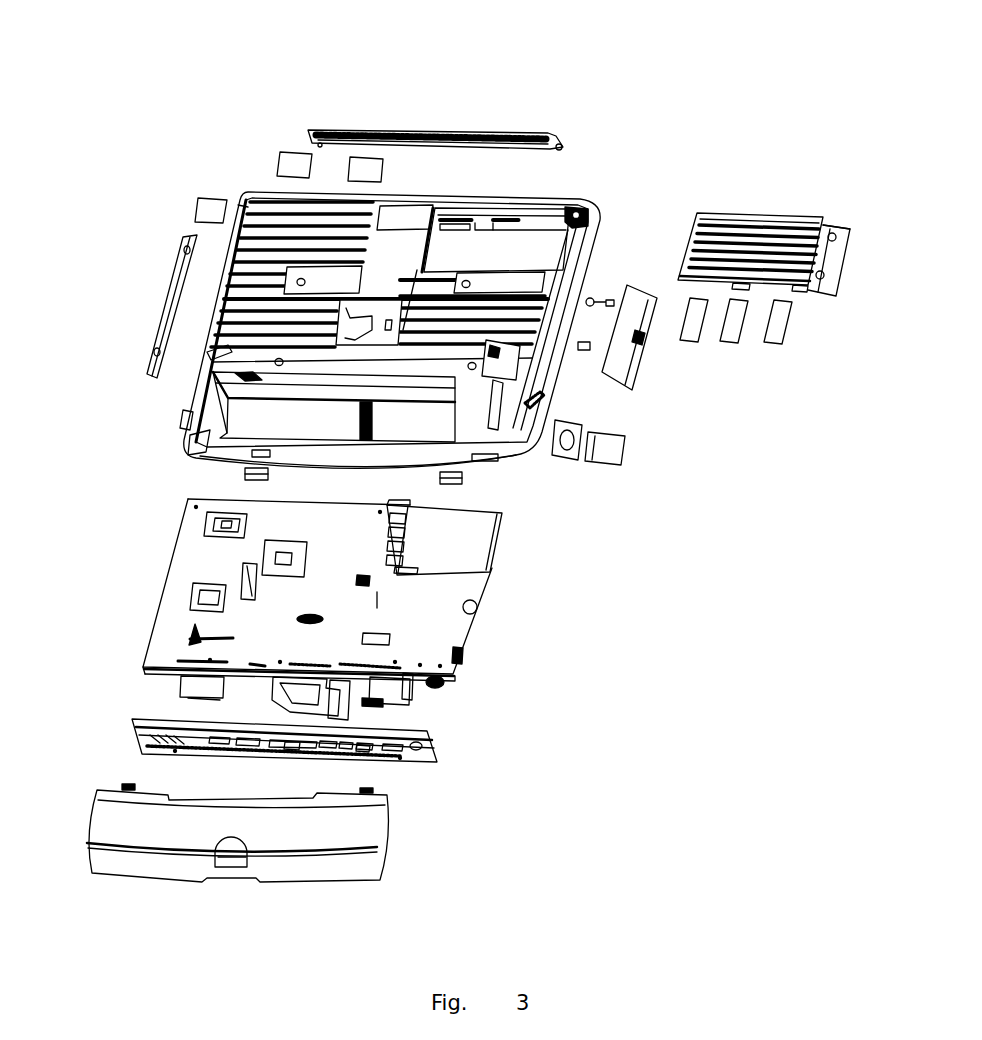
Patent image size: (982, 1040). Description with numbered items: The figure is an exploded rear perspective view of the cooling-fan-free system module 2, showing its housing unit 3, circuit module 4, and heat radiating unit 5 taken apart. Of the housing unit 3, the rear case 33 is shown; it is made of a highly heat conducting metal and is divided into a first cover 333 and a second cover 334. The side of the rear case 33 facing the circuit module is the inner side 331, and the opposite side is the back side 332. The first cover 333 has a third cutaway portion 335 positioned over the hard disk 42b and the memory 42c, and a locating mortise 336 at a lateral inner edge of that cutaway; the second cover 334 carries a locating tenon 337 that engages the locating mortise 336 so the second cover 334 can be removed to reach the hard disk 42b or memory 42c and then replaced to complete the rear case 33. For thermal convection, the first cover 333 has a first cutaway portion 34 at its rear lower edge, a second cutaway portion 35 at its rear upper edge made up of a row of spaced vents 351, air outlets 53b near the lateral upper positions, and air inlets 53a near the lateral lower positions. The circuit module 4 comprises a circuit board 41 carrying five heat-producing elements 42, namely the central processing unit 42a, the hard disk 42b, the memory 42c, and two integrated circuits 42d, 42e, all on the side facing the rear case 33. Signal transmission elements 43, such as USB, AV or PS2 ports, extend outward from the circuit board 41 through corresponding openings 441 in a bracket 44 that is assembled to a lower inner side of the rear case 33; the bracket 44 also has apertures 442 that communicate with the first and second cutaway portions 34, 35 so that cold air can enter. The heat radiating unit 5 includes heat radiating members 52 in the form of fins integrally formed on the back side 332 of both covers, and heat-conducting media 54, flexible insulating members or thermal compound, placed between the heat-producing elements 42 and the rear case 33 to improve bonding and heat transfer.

The system module 2 is at (574, 106).
The housing unit 3 is at (202, 318).
The circuit module 4 is at (447, 694).
The heat radiating unit 5 is at (768, 387).
The rear case 33 is at (178, 402).
The first cutaway portion 34 is at (232, 866).
The second cutaway portion 35 is at (451, 130).
The circuit board 41 is at (445, 681).
The heat-producing element 42 is at (210, 688).
The central processing unit 42a is at (215, 524).
The hard disk 42b is at (460, 548).
The memory 42c is at (423, 568).
The integrated circuit 42d is at (265, 558).
The integrated circuit 42e is at (195, 602).
The signal transmission element 43 is at (267, 694).
The bracket 44 is at (386, 756).
The heat radiating member 52 is at (232, 277).
The air inlet 53a is at (182, 412).
The air outlet 53b is at (242, 202).
The heat-conducting medium 54 is at (368, 162).
The inner side 331 is at (516, 477).
The back side 332 is at (228, 356).
The first cover 333 is at (200, 443).
The second cover 334 is at (823, 298).
The third cutaway portion 335 is at (520, 240).
The locating mortise 336 is at (433, 221).
The locating tenon 337 is at (690, 232).
The vent 351 is at (404, 131).
The opening 441 is at (358, 740).
The aperture 442 is at (357, 750).